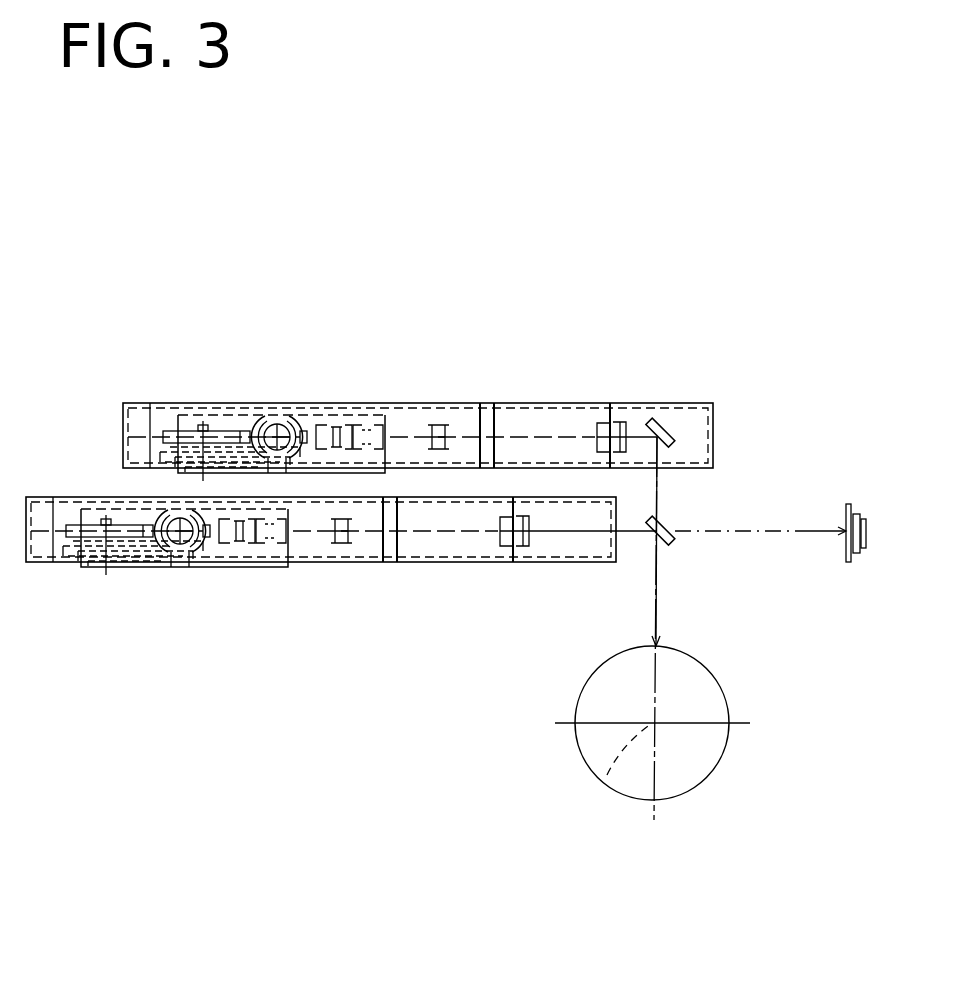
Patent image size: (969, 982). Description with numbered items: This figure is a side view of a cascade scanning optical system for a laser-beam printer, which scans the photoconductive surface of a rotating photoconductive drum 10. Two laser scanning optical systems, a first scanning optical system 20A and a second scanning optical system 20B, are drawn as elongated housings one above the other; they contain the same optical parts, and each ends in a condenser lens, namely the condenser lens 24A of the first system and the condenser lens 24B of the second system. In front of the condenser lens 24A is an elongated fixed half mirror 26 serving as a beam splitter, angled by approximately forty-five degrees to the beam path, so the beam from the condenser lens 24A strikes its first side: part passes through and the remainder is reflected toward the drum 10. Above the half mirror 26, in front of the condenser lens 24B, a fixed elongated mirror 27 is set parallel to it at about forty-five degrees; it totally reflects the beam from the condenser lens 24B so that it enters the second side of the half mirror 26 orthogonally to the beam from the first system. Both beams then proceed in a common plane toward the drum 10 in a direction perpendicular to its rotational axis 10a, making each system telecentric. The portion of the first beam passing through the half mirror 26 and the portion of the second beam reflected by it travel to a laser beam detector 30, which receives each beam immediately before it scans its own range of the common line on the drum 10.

The photoconductive drum 10 is at (716, 676).
The rotational axis 10a is at (607, 775).
The first scanning optical system 20A is at (331, 518).
The second scanning optical system 20B is at (418, 400).
The condenser lens 24A is at (514, 531).
The condenser lens 24B is at (586, 412).
The half mirror 26 is at (666, 519).
The mirror 27 is at (656, 416).
The laser beam detector 30 is at (855, 505).